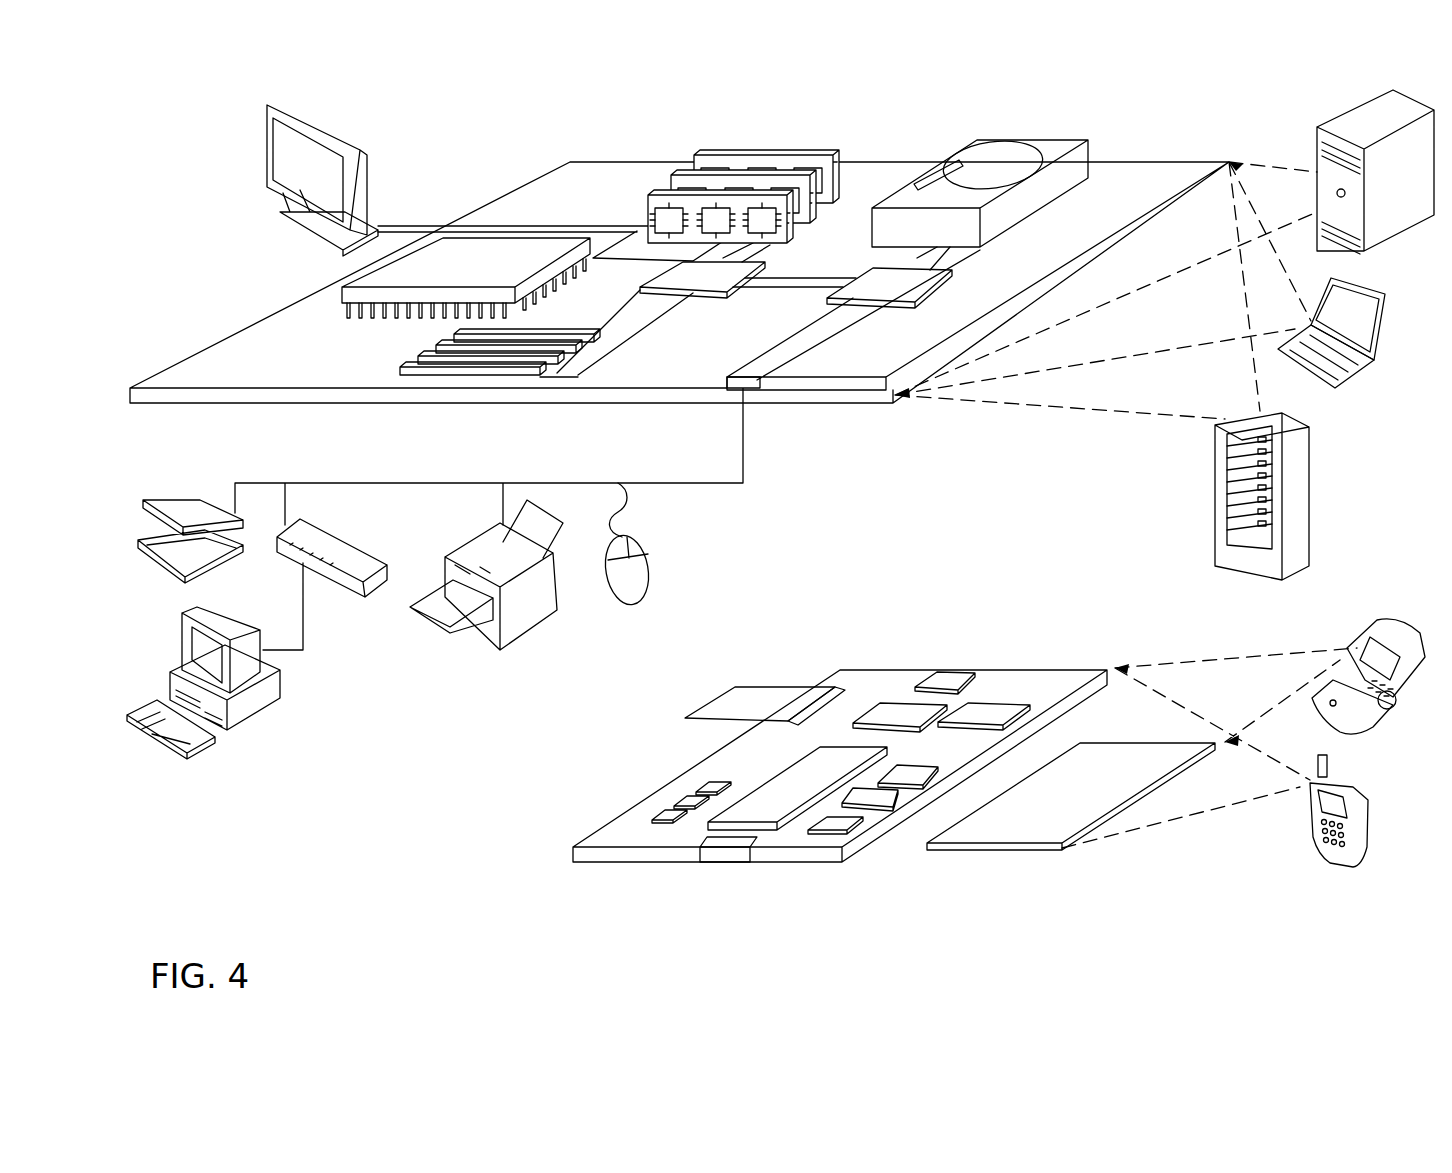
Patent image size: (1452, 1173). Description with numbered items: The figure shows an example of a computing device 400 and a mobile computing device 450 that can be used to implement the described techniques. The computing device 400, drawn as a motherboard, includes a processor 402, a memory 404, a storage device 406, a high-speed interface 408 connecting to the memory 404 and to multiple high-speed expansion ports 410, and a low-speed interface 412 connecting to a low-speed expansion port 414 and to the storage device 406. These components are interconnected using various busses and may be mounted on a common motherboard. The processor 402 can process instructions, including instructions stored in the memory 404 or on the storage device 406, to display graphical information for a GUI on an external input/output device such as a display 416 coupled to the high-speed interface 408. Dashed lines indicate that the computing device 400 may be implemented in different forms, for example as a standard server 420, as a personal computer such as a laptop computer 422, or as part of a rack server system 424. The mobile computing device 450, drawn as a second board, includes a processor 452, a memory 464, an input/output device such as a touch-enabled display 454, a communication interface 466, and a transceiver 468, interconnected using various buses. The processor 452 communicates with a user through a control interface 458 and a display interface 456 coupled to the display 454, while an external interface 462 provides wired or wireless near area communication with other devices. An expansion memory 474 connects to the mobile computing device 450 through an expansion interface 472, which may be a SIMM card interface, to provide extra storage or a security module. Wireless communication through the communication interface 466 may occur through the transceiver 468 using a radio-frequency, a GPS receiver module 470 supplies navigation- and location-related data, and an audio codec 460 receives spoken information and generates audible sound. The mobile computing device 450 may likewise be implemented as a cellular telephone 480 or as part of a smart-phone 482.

The computing device 400 is at (487, 133).
The processor 402 is at (353, 293).
The memory 404 is at (716, 157).
The storage device 406 is at (963, 141).
The high-speed interface 408 is at (677, 273).
The high-speed expansion ports 410 is at (420, 356).
The low-speed interface 412 is at (869, 279).
The low-speed expansion port 414 is at (758, 389).
The display 416 is at (267, 104).
The standard server 420 is at (1317, 140).
The laptop computer 422 is at (1388, 271).
The rack server system 424 is at (1215, 521).
The mobile computing device 450 is at (546, 861).
The processor 452 is at (770, 822).
The touch-enabled display 454 is at (1030, 832).
The display interface 456 is at (848, 822).
The control interface 458 is at (885, 798).
The audio codec 460 is at (908, 772).
The external interface 462 is at (728, 862).
The memory 464 is at (670, 806).
The communication interface 466 is at (900, 707).
The transceiver 468 is at (987, 708).
The GPS receiver module 470 is at (955, 680).
The expansion interface 472 is at (823, 682).
The expansion memory 474 is at (740, 687).
The cellular telephone 480 is at (1370, 623).
The smart-phone 482 is at (1308, 818).